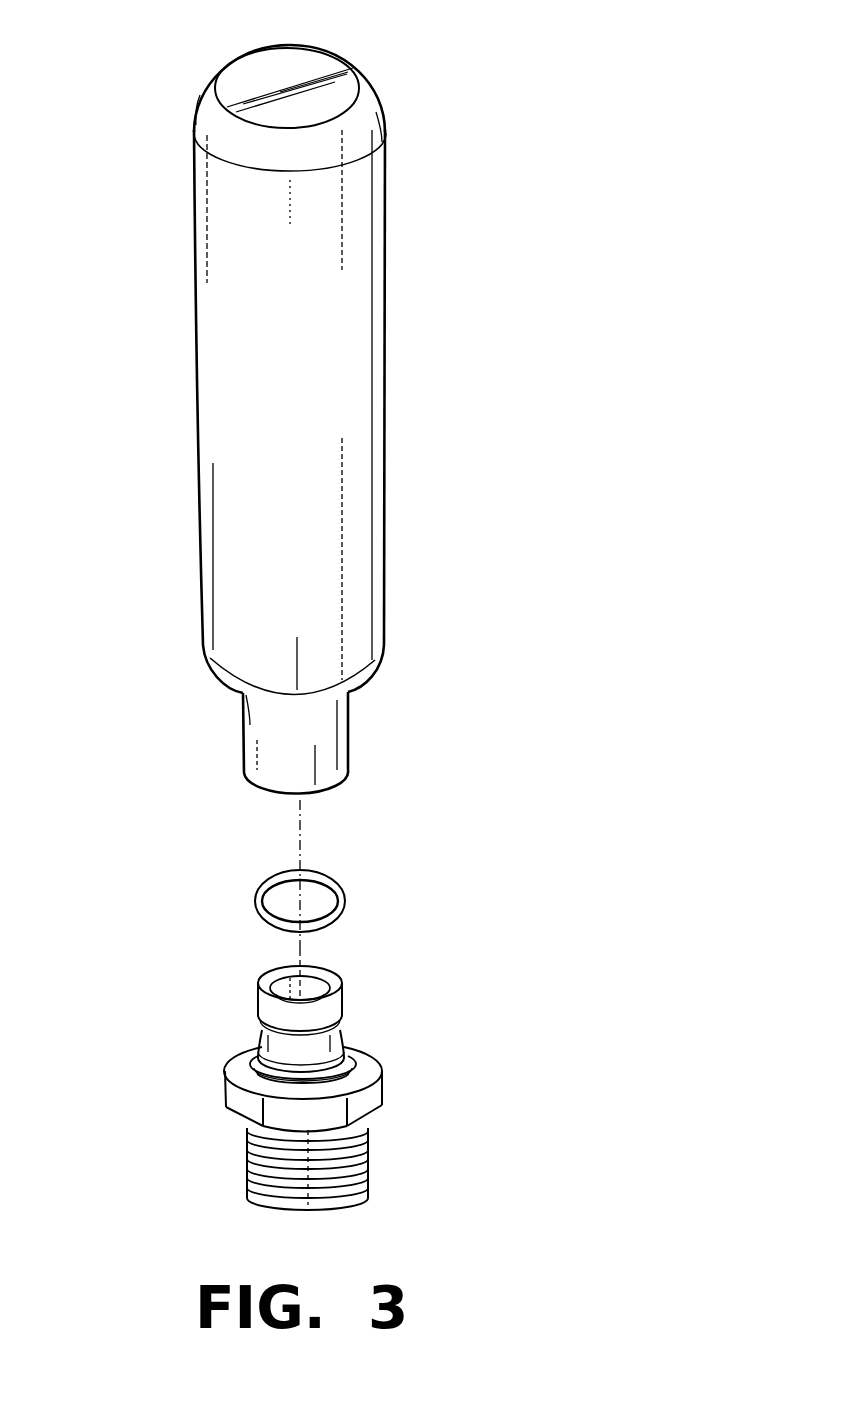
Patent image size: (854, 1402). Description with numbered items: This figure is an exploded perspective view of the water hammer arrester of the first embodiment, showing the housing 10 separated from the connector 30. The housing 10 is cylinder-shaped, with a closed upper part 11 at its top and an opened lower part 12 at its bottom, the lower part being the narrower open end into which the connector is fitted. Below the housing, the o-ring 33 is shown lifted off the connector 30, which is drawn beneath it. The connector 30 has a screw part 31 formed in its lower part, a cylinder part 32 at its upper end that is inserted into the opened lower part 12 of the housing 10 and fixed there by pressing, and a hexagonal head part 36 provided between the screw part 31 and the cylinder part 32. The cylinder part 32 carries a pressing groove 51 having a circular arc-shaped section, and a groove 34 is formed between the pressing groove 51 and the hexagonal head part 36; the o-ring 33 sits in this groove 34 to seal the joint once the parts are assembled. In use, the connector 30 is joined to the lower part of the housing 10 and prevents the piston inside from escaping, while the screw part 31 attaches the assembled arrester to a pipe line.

The housing 10 is at (357, 428).
The closed upper part 11 is at (297, 80).
The opened lower part 12 is at (325, 738).
The connector 30 is at (302, 1080).
The screw part 31 is at (262, 1163).
The cylinder part 32 is at (343, 1003).
The o-ring 33 is at (345, 895).
The groove 34 is at (363, 1040).
The hexagonal head part 36 is at (242, 1093).
The pressing groove 51 is at (262, 1025).